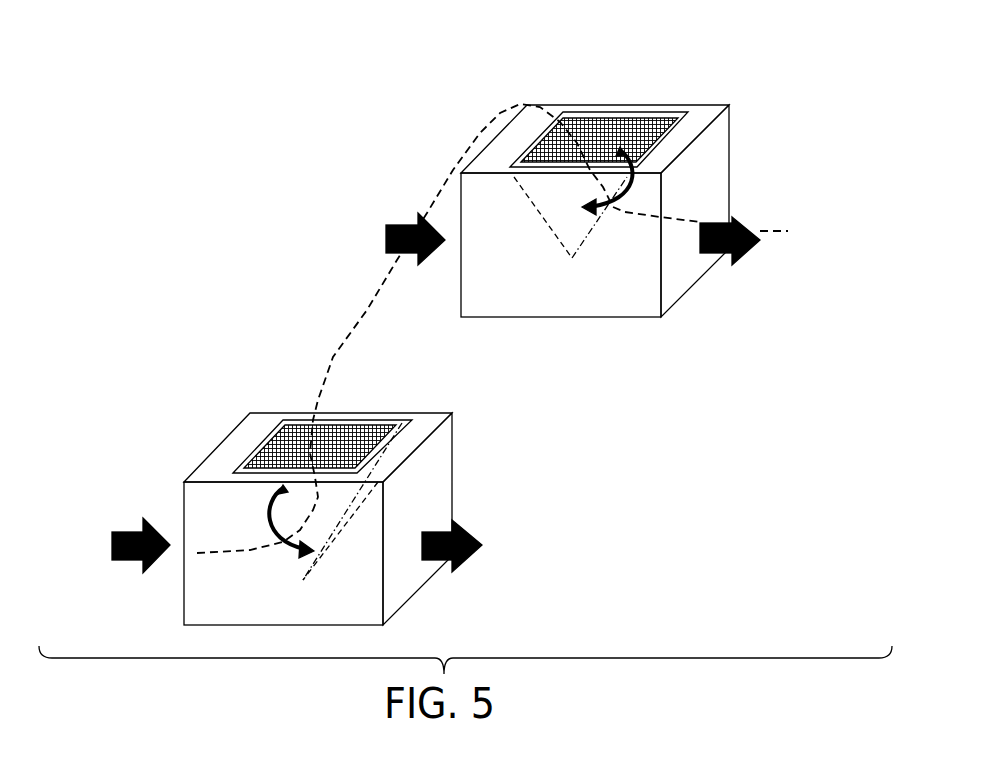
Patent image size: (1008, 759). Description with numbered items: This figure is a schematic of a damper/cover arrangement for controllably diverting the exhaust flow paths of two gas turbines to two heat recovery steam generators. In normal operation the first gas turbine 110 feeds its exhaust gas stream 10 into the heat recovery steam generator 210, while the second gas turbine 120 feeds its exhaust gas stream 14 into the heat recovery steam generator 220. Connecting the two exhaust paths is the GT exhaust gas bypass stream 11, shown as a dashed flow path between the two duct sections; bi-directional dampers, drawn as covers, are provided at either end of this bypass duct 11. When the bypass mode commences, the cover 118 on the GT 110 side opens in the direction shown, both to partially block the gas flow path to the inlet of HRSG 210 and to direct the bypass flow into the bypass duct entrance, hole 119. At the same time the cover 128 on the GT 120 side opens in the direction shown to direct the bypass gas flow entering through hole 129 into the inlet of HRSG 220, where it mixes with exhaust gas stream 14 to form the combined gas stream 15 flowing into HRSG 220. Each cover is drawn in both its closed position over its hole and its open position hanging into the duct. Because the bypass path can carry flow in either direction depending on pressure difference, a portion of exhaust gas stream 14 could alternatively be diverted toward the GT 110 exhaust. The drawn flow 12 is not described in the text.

The GT 110 exhaust gas stream 10 is at (120, 532).
The GT exhaust gas bypass stream 11 is at (365, 308).
The HRSG inlet flow 12 is at (458, 523).
The GT 120 exhaust gas stream 14 is at (397, 225).
The gas stream into HRSG 220 15 is at (737, 217).
The gas turbine 110 is at (100, 518).
The cover 118 is at (251, 440).
The hole 119 is at (355, 430).
The gas turbine 120 is at (376, 210).
The cover 128 is at (521, 129).
The hole 129 is at (619, 120).
The heat recovery steam generator 210 is at (512, 523).
The heat recovery steam generator 220 is at (792, 215).